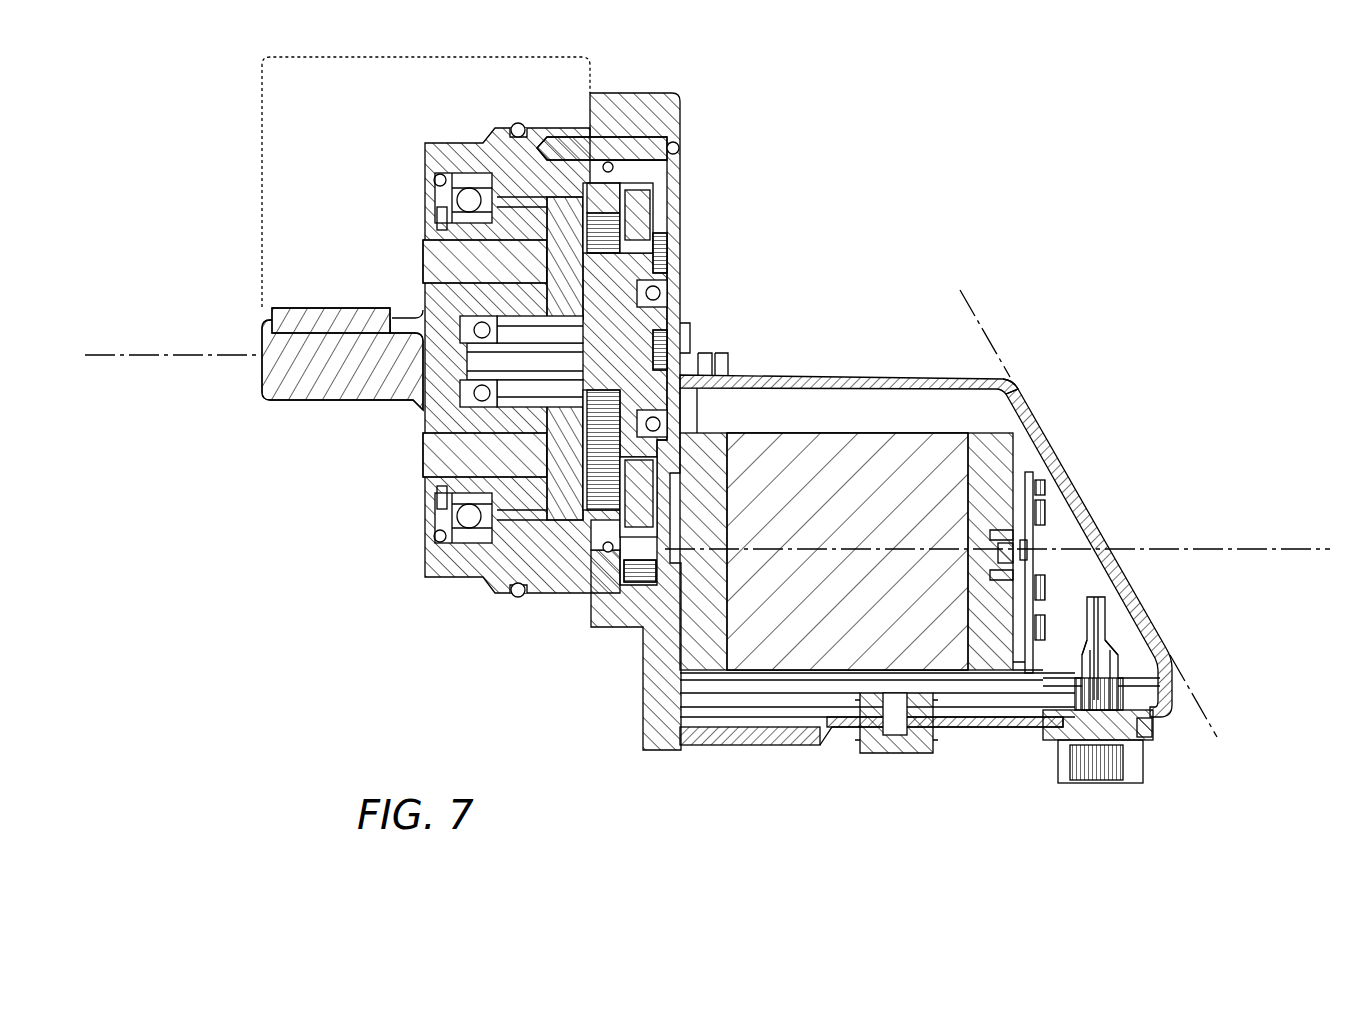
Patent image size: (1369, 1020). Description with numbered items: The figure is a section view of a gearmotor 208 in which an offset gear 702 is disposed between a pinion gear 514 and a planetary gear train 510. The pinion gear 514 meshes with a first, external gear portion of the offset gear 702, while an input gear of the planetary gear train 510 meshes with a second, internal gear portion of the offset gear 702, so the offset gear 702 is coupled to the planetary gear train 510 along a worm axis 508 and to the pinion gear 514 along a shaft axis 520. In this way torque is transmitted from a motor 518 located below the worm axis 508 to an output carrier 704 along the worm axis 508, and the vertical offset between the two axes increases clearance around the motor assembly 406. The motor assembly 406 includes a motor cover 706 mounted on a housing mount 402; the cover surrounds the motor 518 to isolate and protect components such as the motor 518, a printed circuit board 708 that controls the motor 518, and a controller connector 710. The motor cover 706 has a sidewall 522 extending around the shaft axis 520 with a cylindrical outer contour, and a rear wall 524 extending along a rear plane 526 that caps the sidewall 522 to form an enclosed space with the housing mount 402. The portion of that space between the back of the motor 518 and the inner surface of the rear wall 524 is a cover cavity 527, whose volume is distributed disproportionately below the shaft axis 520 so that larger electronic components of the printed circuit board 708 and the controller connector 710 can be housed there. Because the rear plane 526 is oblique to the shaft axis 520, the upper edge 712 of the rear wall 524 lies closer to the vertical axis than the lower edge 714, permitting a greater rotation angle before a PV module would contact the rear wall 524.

The gearmotor 208 is at (1047, 128).
The housing mount 402 is at (645, 90).
The motor assembly 406 is at (764, 370).
The worm axis 508 is at (147, 355).
The planetary gear train 510 is at (432, 57).
The pinion gear 514 is at (637, 578).
The motor 518 is at (805, 640).
The shaft axis 520 is at (1260, 550).
The sidewall 522 is at (828, 382).
The rear wall 524 is at (1090, 520).
The rear plane 526 is at (1213, 733).
The cover cavity 527 is at (1072, 570).
The offset gear 702 is at (635, 490).
The output carrier 704 is at (300, 380).
The motor cover 706 is at (702, 412).
The printed circuit board 708 is at (1060, 475).
The controller connector 710 is at (1055, 646).
The upper edge 712 is at (1012, 385).
The lower edge 714 is at (1170, 656).